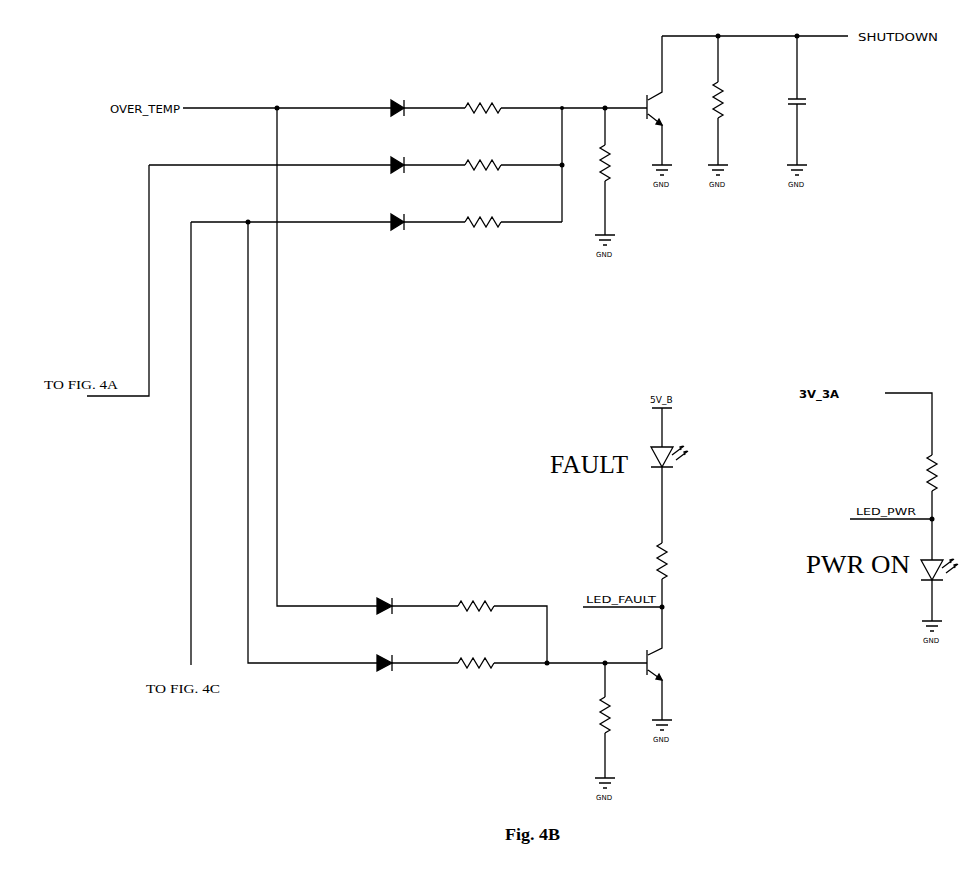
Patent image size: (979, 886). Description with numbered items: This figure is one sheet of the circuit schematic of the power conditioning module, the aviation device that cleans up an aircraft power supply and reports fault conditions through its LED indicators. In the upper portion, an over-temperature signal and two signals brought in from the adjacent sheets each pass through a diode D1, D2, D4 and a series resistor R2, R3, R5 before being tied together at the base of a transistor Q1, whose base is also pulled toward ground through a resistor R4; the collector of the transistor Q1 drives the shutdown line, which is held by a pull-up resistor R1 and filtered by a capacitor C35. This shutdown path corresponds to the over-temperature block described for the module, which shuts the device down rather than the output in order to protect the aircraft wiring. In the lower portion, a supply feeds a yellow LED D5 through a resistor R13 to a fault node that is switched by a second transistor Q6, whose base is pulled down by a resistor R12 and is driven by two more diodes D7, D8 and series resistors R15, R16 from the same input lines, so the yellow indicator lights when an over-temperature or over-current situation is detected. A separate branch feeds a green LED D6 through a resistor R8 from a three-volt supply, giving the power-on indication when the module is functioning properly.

The diode BAS116 D1 is at (412, 107).
The diode BAS116 D2 is at (412, 164).
The diode BAS116 D4 is at (412, 221).
The resistor 22K R2 is at (483, 109).
The resistor 10K R3 is at (483, 166).
The resistor 22K R5 is at (483, 223).
The resistor 22K R4 is at (617, 163).
The transistor BC846 Q1 is at (667, 100).
The resistor 100K R1 is at (732, 100).
The capacitor 0.1uF C35 is at (814, 109).
The LED yellow (fault) D5 is at (686, 457).
The resistor 150 R13 is at (675, 561).
The transistor BC846 Q6 is at (667, 663).
The resistor 4.7K R12 is at (618, 714).
The diode BAS116 D7 is at (398, 605).
The diode BAS116 D8 is at (398, 662).
The resistor 22K R15 is at (476, 608).
The resistor 22K R16 is at (476, 665).
The resistor 150 R8 is at (945, 473).
The LED green (power on) D6 is at (948, 569).